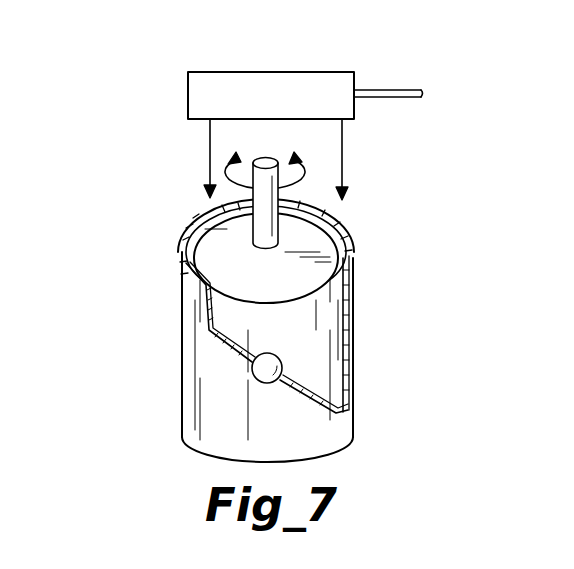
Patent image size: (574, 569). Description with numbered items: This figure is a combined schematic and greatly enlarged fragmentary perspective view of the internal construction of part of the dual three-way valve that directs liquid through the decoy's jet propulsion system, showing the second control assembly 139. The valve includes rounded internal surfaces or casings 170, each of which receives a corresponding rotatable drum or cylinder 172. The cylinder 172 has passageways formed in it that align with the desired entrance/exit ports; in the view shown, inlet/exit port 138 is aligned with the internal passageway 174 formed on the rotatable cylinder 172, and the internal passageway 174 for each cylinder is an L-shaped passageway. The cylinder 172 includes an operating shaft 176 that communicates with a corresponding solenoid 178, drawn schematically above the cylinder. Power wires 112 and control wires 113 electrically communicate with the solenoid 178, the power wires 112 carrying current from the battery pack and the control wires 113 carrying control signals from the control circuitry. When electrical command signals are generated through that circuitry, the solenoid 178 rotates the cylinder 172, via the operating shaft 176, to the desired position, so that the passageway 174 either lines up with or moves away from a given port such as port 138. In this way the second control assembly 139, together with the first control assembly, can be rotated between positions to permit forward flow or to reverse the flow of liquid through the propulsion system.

The solenoid 178 is at (297, 72).
The electrical lines 112 is at (420, 56).
The communication lines 113 is at (390, 99).
The rounded internal surfaces or casings 170 is at (181, 343).
The rotatable drum or cylinder 172 is at (331, 313).
The internal passageway 174 is at (283, 358).
The operating shaft 176 is at (258, 228).
The entrance/exit port 138 is at (259, 384).
The second control assembly 139 is at (173, 390).